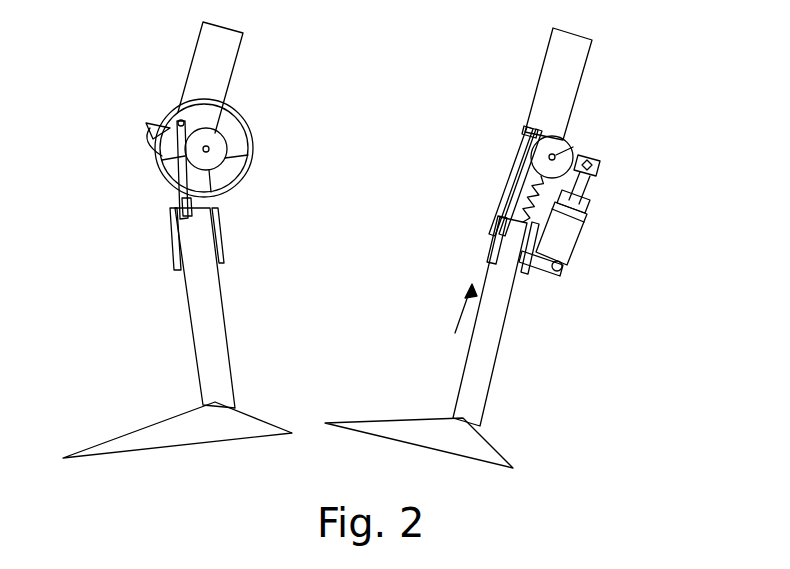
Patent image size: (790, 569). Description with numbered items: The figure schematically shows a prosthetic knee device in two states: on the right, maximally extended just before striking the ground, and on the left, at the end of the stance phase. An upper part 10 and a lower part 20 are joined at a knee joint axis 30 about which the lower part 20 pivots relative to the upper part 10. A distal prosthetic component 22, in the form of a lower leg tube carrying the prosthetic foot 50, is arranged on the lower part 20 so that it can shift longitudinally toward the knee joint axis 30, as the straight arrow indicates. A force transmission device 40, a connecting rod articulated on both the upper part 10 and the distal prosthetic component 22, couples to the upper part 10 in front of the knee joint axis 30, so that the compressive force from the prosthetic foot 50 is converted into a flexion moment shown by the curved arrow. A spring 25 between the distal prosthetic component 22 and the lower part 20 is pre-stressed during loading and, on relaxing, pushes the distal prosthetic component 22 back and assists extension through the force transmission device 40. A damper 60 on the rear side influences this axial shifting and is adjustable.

The upper part 10 is at (225, 52).
The lower part 20 is at (222, 230).
The distal prosthetic component 22 is at (223, 323).
The spring 25 is at (517, 187).
The knee joint axis 30 is at (210, 152).
The force transmission device 40 is at (160, 152).
The prosthetic foot 50 is at (163, 422).
The damper 60 is at (600, 238).